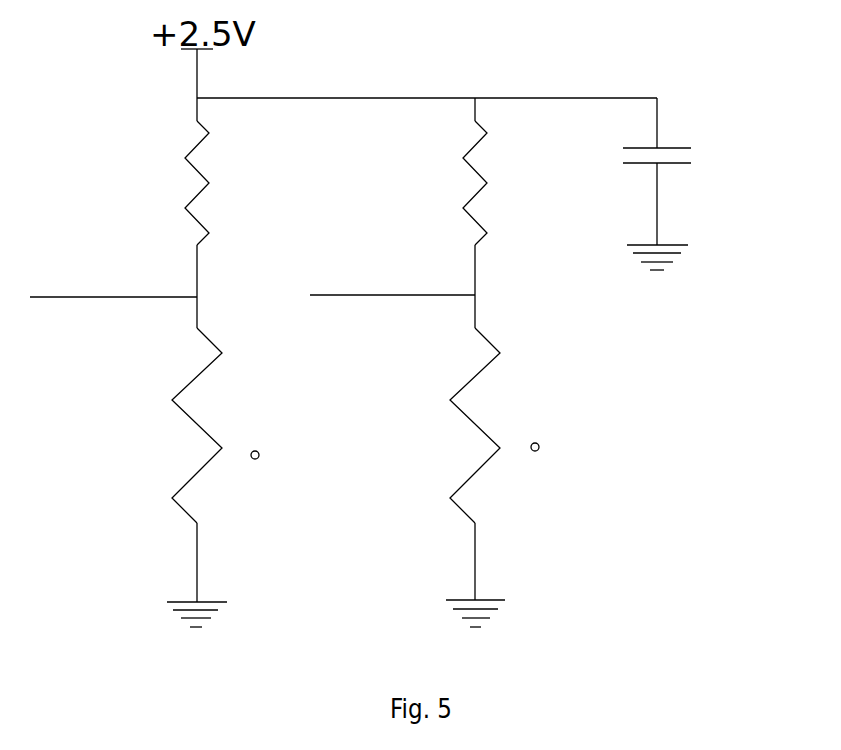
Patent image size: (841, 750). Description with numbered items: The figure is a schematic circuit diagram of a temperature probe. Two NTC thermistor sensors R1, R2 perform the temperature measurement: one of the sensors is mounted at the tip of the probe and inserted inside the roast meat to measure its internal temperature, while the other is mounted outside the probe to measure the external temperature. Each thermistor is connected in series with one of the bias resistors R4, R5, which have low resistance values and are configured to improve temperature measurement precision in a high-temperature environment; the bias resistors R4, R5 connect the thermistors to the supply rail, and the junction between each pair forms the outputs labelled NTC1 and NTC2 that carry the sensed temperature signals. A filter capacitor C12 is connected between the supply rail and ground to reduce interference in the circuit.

The bias resistor R4 is at (221, 213).
The bias resistor R5 is at (500, 213).
The NTC thermistor sensor R1 is at (247, 465).
The NTC thermistor sensor R2 is at (527, 464).
The filter capacitor C12 is at (699, 171).
The temperature sensing output NTC1 is at (113, 280).
The temperature sensing output NTC2 is at (392, 278).